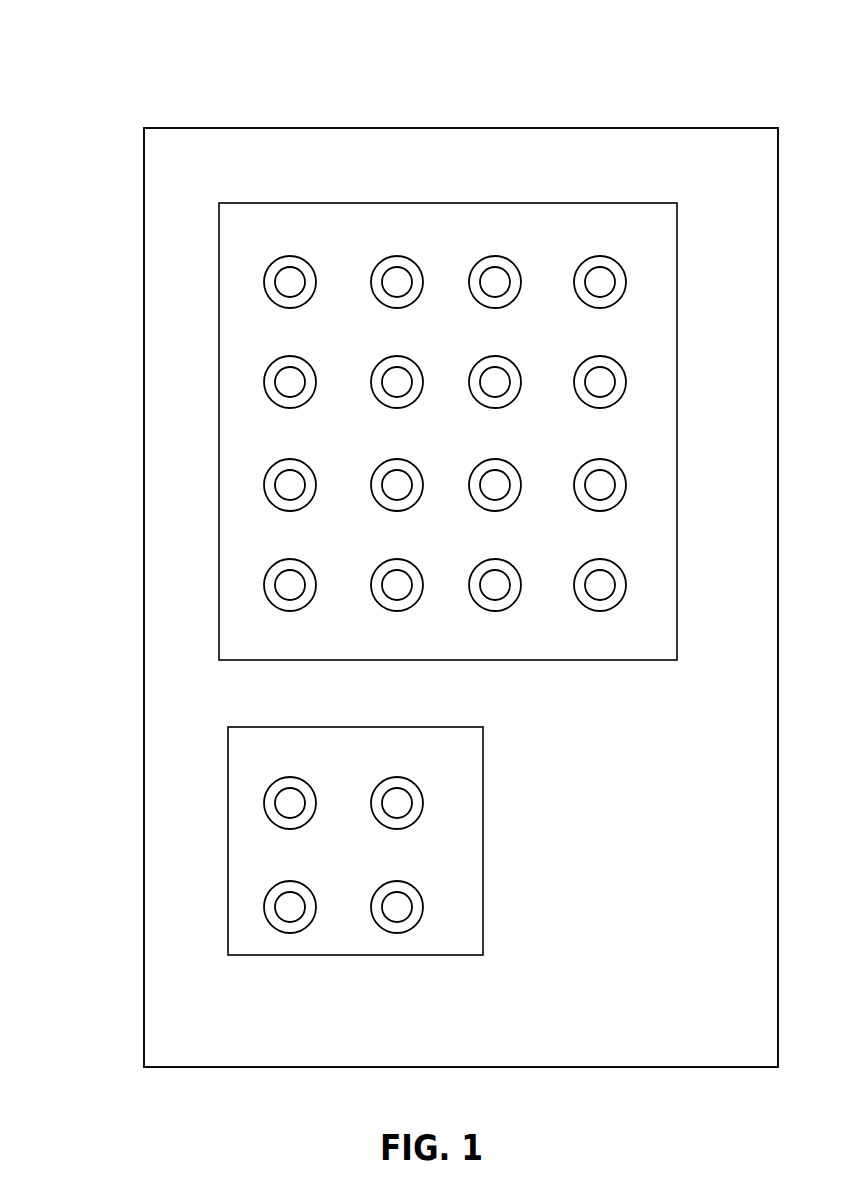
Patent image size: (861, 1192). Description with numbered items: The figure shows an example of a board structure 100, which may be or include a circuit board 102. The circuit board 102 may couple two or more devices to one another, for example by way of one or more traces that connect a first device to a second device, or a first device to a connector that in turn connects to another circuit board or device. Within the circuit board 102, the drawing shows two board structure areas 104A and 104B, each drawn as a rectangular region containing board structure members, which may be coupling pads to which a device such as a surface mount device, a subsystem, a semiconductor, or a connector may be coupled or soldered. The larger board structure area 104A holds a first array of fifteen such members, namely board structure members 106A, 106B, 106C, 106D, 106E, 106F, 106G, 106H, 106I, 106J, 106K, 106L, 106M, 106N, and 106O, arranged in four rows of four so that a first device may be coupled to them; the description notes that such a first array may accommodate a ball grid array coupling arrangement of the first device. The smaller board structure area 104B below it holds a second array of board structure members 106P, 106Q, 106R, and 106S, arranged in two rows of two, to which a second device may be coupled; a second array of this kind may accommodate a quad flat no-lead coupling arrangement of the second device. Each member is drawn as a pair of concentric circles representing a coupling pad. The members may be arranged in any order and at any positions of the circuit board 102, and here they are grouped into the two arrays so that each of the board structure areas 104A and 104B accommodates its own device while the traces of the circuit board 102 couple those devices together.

The board structure 100 is at (104, 70).
The circuit board 102 is at (461, 597).
The board structure area 104A is at (522, 203).
The board structure area 104B is at (288, 955).
The board structure member 106A is at (293, 255).
The board structure member 106B is at (400, 255).
The board structure member 106C is at (498, 255).
The board structure member 106D is at (603, 255).
The board structure member 106E is at (293, 355).
The board structure member 106F is at (400, 355).
The board structure member 106G is at (498, 355).
The board structure member 106H is at (603, 355).
The board structure member 106I is at (293, 458).
The board structure member 106J is at (400, 458).
The board structure member 106K is at (603, 458).
The board structure member 106L is at (293, 558).
The board structure member 106M is at (400, 558).
The board structure member 106N is at (498, 558).
The board structure member 106O is at (603, 558).
The board structure member 106P is at (293, 776).
The board structure member 106Q is at (400, 776).
The board structure member 106R is at (293, 880).
The board structure member 106S is at (400, 880).